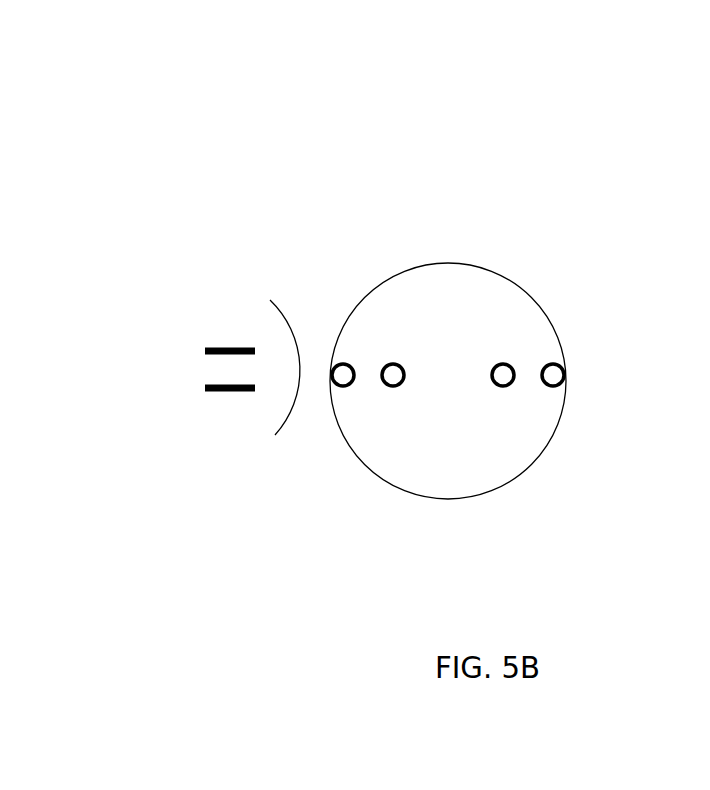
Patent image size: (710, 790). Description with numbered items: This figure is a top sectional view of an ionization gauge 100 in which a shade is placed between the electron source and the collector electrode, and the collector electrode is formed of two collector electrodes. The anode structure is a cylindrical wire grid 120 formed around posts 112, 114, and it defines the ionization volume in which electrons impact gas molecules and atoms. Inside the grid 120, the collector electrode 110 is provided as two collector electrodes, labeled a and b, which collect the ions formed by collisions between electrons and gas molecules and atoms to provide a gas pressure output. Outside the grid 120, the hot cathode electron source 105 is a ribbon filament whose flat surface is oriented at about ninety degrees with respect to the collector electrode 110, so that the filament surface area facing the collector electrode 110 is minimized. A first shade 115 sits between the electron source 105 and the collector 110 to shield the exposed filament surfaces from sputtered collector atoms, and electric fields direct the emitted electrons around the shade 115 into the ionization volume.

The ionization gauge 100 is at (327, 162).
The electron source 105 is at (193, 388).
The collector electrode 110 is at (465, 425).
The post 112 is at (342, 360).
The post 114 is at (542, 365).
The first shade 115 is at (282, 427).
The cylindrical wire grid 120 is at (533, 465).